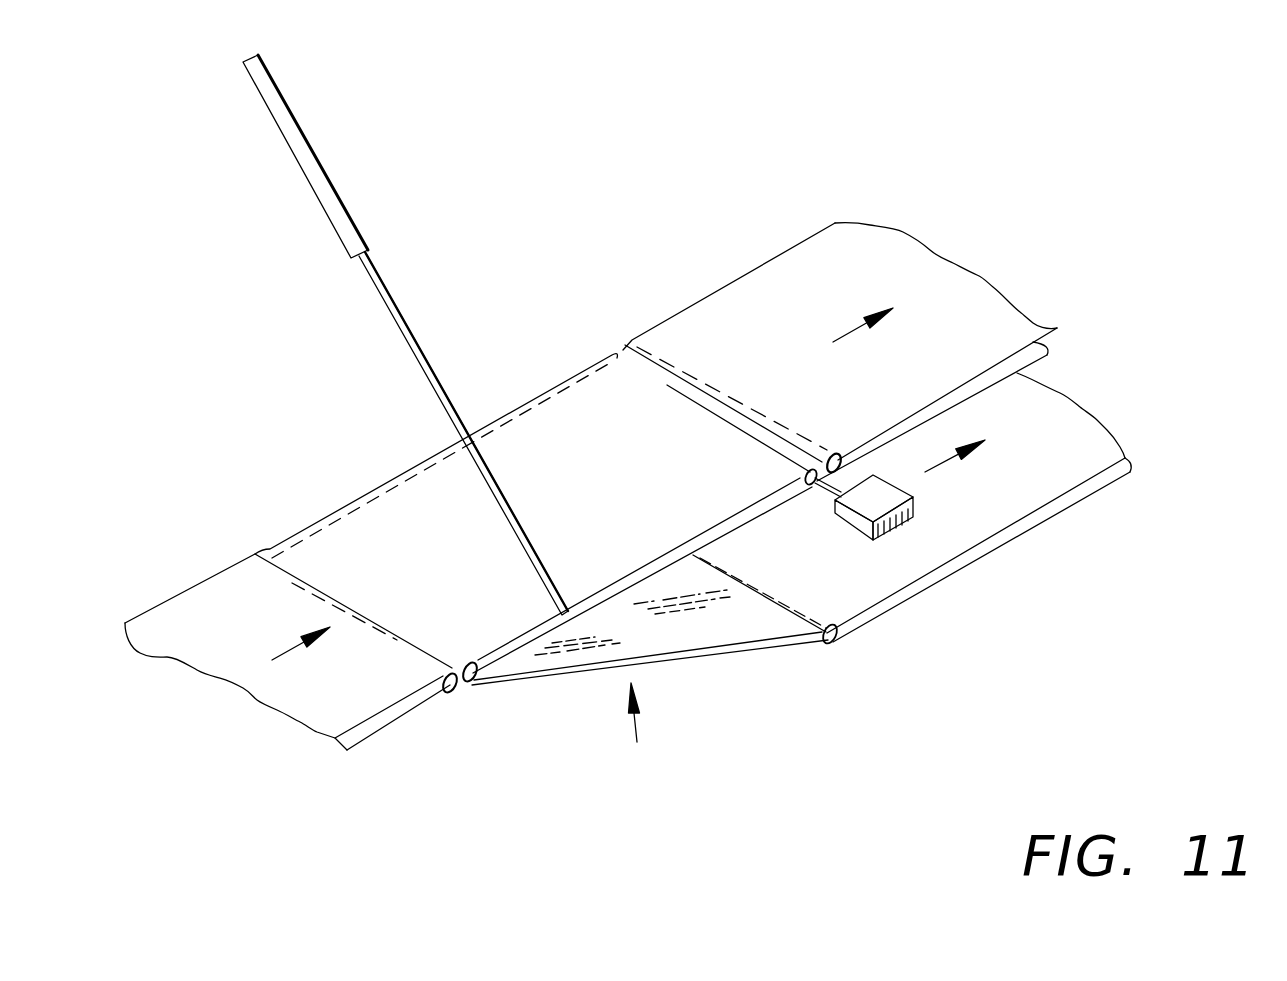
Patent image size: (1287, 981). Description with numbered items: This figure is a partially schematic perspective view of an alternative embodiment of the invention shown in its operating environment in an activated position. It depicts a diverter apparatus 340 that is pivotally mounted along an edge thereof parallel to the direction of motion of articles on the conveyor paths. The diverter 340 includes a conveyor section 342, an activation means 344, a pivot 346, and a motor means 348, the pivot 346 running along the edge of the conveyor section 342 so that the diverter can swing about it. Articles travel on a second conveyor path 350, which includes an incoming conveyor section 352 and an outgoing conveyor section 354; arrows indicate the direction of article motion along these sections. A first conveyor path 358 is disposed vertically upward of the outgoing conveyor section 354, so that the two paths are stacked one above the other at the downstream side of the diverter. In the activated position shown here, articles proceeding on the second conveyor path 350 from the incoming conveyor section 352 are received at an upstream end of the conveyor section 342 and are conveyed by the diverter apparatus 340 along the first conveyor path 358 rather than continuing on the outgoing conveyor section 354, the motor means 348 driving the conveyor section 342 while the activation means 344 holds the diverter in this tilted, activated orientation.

The diverter apparatus 340 is at (498, 288).
The conveyor section 342 is at (365, 548).
The activation means 344 is at (318, 175).
The pivot 346 is at (588, 357).
The motor means 348 is at (880, 503).
The second conveyor path 350 is at (650, 668).
The incoming conveyor section 352 is at (207, 618).
The outgoing conveyor section 354 is at (867, 575).
The first conveyor path 358 is at (730, 327).